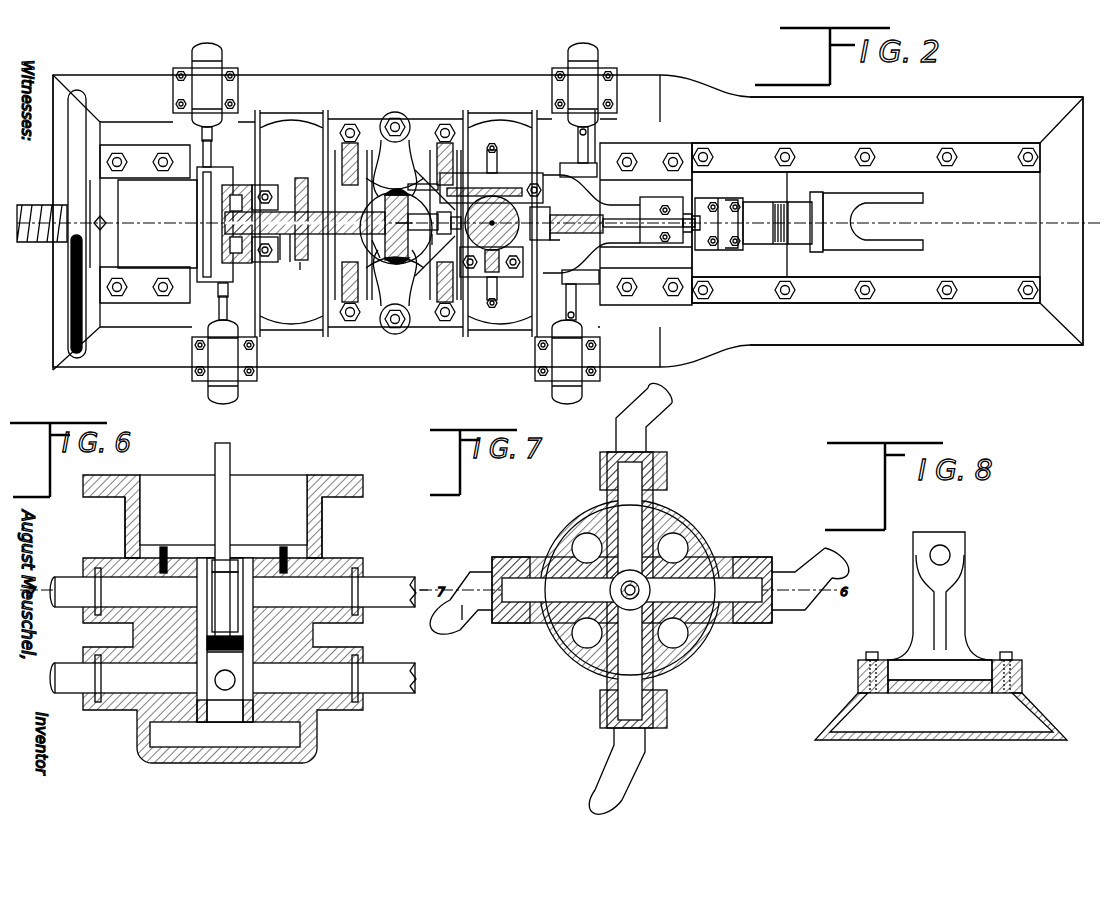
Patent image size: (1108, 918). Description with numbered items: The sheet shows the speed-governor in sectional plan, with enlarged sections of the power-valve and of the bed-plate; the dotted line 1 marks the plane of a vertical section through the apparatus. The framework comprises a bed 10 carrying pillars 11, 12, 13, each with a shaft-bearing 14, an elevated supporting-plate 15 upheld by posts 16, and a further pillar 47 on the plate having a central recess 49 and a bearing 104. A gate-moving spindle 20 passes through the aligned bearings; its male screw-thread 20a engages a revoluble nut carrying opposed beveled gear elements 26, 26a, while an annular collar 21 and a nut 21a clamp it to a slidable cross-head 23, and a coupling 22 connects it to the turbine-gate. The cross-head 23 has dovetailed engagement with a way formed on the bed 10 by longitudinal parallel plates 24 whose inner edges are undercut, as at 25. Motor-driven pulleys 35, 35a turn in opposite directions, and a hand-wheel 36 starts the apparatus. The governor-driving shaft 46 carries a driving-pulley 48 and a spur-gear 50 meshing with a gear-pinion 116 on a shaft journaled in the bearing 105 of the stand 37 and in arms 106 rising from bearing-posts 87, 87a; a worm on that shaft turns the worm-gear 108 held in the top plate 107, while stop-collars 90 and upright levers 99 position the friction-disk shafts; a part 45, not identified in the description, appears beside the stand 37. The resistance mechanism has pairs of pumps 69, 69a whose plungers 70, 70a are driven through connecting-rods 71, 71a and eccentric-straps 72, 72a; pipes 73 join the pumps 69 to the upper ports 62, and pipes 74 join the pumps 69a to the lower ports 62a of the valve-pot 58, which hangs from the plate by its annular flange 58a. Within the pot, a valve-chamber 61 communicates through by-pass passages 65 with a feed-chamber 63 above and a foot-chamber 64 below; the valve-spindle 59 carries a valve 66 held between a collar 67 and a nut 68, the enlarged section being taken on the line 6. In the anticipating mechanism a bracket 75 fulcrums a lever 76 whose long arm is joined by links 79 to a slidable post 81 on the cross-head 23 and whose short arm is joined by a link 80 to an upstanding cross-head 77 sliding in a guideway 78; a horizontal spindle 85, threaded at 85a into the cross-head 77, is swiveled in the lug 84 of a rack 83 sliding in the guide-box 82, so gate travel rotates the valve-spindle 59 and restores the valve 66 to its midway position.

In FIG. 2, the section line 1 is at (884, 223).
In FIG. 2, the bed 10 is at (872, 332).
In FIG. 8, the bed 10 is at (818, 738).
In FIG. 2, the pillar 11 is at (142, 292).
In FIG. 2, the pillar 12 is at (428, 320).
In FIG. 2, the pillar 13 is at (648, 292).
In FIG. 2, the shaft-bearing 14 is at (399, 224).
In FIG. 2, the elevated supporting-plate 15 is at (390, 285).
In FIG. 2, the posts 16 is at (402, 113).
In FIG. 2, the gate-moving spindle 20 is at (690, 205).
In FIG. 2, the male screw-thread 20a is at (38, 243).
In FIG. 2, the annular collar 21 is at (705, 205).
In FIG. 2, the nut 21a is at (758, 205).
In FIG. 2, the coupling 22 is at (915, 203).
In FIG. 2, the slidable cross-head 23 is at (775, 262).
In FIG. 8, the slidable cross-head 23 is at (955, 600).
In FIG. 2, the longitudinal parallel plates 24 is at (907, 150).
In FIG. 8, the longitudinal parallel plates 24 is at (858, 672).
In FIG. 8, the beveled inner edges 25 is at (890, 693).
In FIG. 2, the gear element 26 is at (448, 126).
In FIG. 2, the gear element 26a is at (346, 126).
In FIG. 2, the motor-driven element 35 is at (495, 333).
In FIG. 2, the motor-driven element 35a is at (298, 333).
In FIG. 2, the hand-wheel 36 is at (70, 323).
In FIG. 2, the stand 37 is at (398, 261).
In FIG. 2, the pin 45 is at (377, 255).
In FIG. 2, the governor-driving shaft 46 is at (322, 234).
In FIG. 2, the pillar 47 is at (282, 262).
In FIG. 2, the driving-pulley 48 is at (225, 205).
In FIG. 2, the central recess 49 is at (296, 270).
In FIG. 2, the spur-gear 50 is at (292, 262).
In FIG. 6, the valve-pot 58 is at (325, 522).
In FIG. 7, the valve-pot 58 is at (610, 678).
In FIG. 6, the annular flange 58a is at (356, 485).
In FIG. 2, the valve-spindle 59 is at (397, 228).
In FIG. 6, the valve-spindle 59 is at (225, 462).
In FIG. 7, the valve-spindle 59 is at (682, 660).
In FIG. 6, the valve-chamber 61 is at (225, 722).
In FIG. 7, the valve-chamber 61 is at (714, 553).
In FIG. 6, the upper ports 62 is at (205, 560).
In FIG. 7, the upper ports 62 is at (668, 520).
In FIG. 6, the lower ports 62a is at (202, 725).
In FIG. 6, the feed-chamber 63 is at (250, 492).
In FIG. 6, the foot-chamber 64 is at (155, 742).
In FIG. 7, the by-pass passages 65 is at (583, 545).
In FIG. 6, the valve 66 is at (238, 556).
In FIG. 7, the valve 66 is at (612, 585).
In FIG. 6, the collar 67 is at (232, 545).
In FIG. 6, the nut 68 is at (245, 640).
In FIG. 2, the pumps 69 is at (588, 68).
In FIG. 2, the pumps 69a is at (213, 66).
In FIG. 2, the plungers 70 is at (578, 130).
In FIG. 2, the plungers 70a is at (212, 130).
In FIG. 2, the connecting-rods 71 is at (578, 140).
In FIG. 2, the rods 71a is at (222, 230).
In FIG. 2, the eccentric-straps 72 is at (591, 205).
In FIG. 2, the straps 72a is at (217, 212).
In FIG. 6, the pipes 73 is at (67, 580).
In FIG. 7, the pipes 73 is at (650, 428).
In FIG. 6, the pipes 74 is at (78, 692).
In FIG. 2, the bracket 75 is at (665, 206).
In FIG. 2, the lever 76 is at (688, 233).
In FIG. 2, the upstanding cross-head 77 is at (558, 246).
In FIG. 2, the guideway 78 is at (543, 210).
In FIG. 2, the links 79 is at (718, 205).
In FIG. 2, the link 80 is at (595, 240).
In FIG. 2, the slidable post 81 is at (737, 236).
In FIG. 2, the guide-box 82 is at (439, 246).
In FIG. 2, the rack 83 is at (423, 210).
In FIG. 2, the lug 84 is at (452, 232).
In FIG. 2, the horizontal spindle 85 is at (452, 218).
In FIG. 2, the threaded portion 85a is at (565, 215).
In FIG. 2, the bearing-post 87 is at (503, 277).
In FIG. 2, the bearing-post 87a is at (512, 176).
In FIG. 2, the stop-collars 90 is at (486, 166).
In FIG. 2, the levers 99 is at (498, 165).
In FIG. 2, the bearing 104 is at (280, 186).
In FIG. 2, the bearing 105 is at (398, 179).
In FIG. 2, the arms 106 is at (480, 266).
In FIG. 2, the top plate 107 is at (484, 184).
In FIG. 2, the worm-gear 108 is at (419, 225).
In FIG. 2, the gear-pinion 116 is at (301, 178).
In FIG. 7, the section line 6 is at (470, 605).